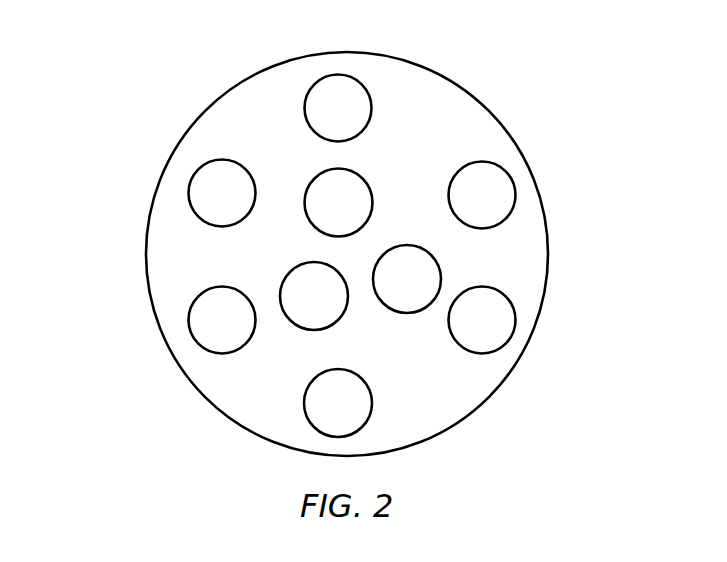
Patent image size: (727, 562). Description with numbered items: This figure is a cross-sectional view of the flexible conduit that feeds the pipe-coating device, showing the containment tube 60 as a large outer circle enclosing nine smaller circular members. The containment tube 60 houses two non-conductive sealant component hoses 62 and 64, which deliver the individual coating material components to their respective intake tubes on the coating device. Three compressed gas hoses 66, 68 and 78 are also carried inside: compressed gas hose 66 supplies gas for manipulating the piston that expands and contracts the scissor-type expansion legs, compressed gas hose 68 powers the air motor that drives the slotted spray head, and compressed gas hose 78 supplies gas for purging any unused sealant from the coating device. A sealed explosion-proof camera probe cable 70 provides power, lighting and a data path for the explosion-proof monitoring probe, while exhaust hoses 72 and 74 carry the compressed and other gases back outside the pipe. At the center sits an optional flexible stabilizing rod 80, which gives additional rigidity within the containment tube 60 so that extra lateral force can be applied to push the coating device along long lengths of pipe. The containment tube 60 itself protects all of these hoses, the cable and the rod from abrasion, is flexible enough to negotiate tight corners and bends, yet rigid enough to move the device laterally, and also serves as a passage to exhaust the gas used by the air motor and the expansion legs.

The containment tube 60 is at (112, 76).
The non-conductive sealant component hose 62 is at (313, 102).
The non-conductive sealant component hose 64 is at (210, 185).
The compressed gas hose 66 is at (210, 325).
The compressed gas hose 68 is at (315, 318).
The sealed explosion-proof camera probe cable 70 is at (333, 417).
The exhaust hose 72 is at (485, 335).
The exhaust hose 74 is at (427, 270).
The compressed gas hose 78 is at (497, 198).
The flexible stabilizing rod 80 is at (355, 199).